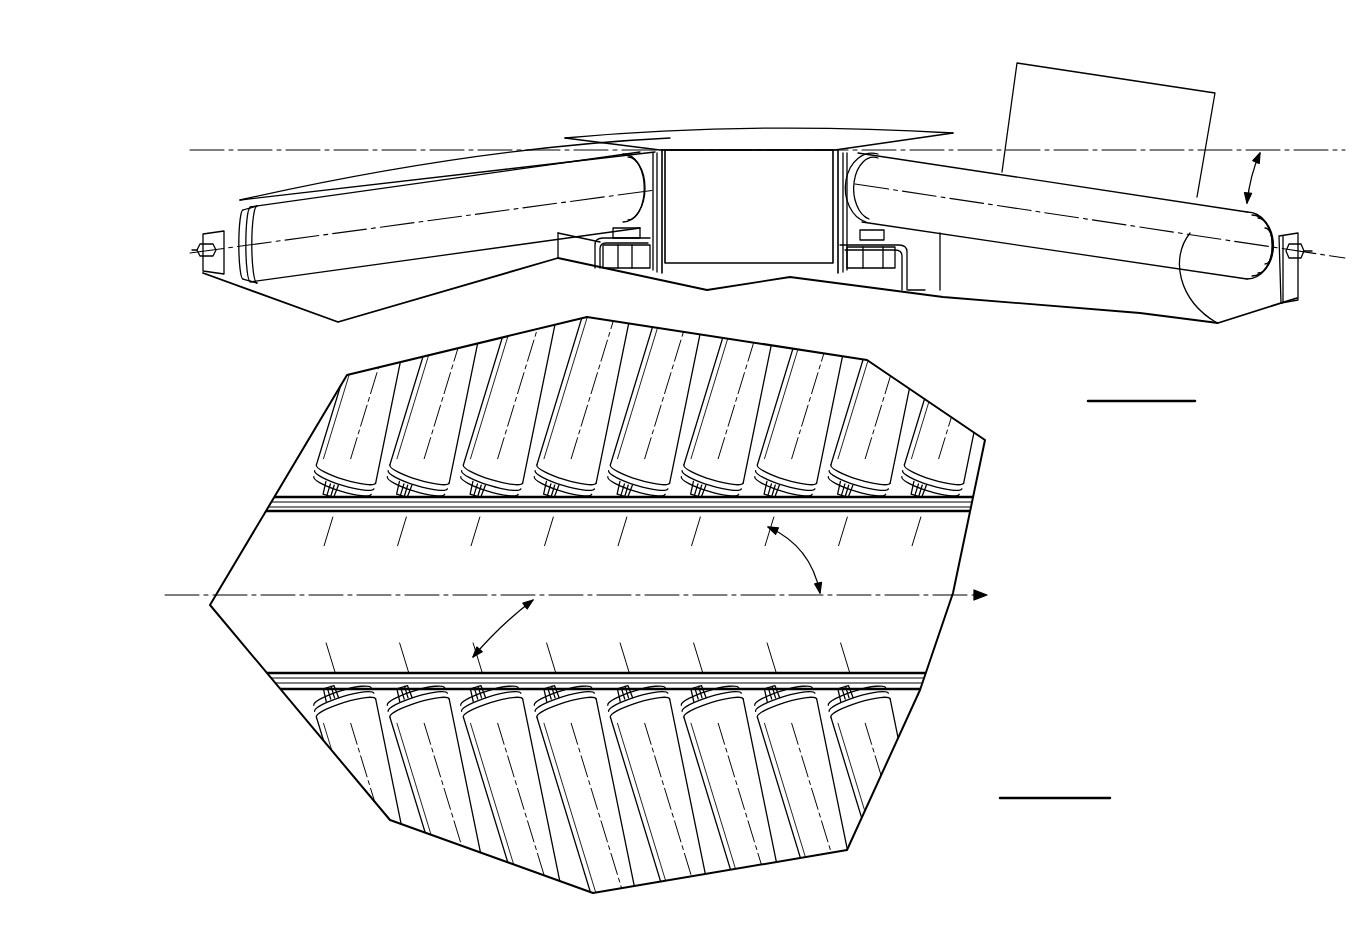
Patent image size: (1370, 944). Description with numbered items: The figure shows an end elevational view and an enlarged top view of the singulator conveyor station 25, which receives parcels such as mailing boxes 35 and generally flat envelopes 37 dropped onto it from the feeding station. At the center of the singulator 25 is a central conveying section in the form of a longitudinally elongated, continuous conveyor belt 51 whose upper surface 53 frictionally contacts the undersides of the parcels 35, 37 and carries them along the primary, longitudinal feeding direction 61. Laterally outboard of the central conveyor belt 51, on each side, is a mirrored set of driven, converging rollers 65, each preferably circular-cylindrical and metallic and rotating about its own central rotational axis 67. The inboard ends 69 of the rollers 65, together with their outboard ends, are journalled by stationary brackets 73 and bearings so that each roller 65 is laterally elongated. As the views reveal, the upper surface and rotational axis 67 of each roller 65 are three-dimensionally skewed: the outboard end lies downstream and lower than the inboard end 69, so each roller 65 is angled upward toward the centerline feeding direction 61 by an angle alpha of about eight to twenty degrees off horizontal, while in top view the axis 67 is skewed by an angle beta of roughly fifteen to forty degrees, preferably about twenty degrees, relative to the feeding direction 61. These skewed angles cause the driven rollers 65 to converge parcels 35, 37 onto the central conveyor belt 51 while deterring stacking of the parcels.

In FIG. 5, the singulator conveyor station 25 is at (757, 228).
In FIG. 6, the singulator conveyor station 25 is at (647, 589).
In FIG. 5, the mailing boxes 35 is at (1015, 84).
In FIG. 5, the flat envelopes 37 is at (358, 169).
In FIG. 5, the conveyor belt 51 is at (777, 228).
In FIG. 6, the conveyor belt 51 is at (915, 647).
In FIG. 5, the upper surface 53 is at (748, 149).
In FIG. 6, the upper surface 53 is at (257, 638).
In FIG. 6, the feeding direction 61 is at (900, 594).
In FIG. 5, the rollers 65 is at (767, 268).
In FIG. 6, the rollers 65 is at (663, 589).
In FIG. 5, the rotational axis 67 is at (417, 220).
In FIG. 6, the rotational axis 67 is at (527, 807).
In FIG. 6, the inboard ends 69 is at (862, 510).
In FIG. 5, the stationary brackets 73 is at (207, 240).